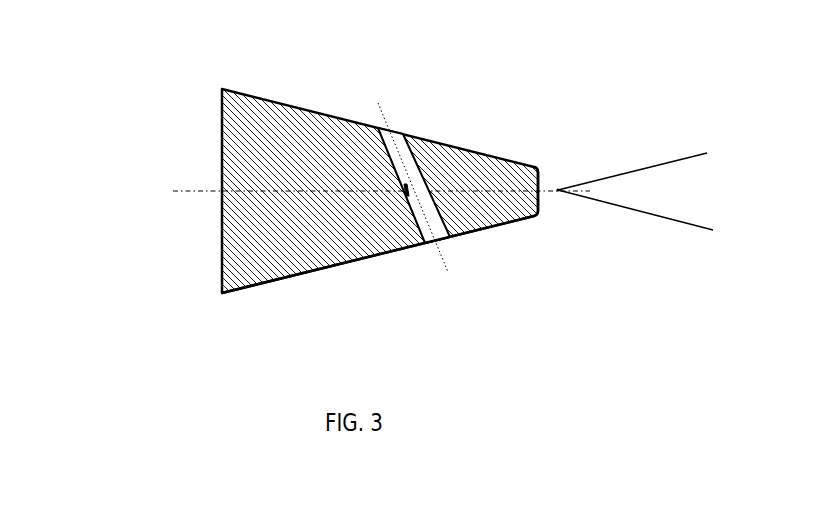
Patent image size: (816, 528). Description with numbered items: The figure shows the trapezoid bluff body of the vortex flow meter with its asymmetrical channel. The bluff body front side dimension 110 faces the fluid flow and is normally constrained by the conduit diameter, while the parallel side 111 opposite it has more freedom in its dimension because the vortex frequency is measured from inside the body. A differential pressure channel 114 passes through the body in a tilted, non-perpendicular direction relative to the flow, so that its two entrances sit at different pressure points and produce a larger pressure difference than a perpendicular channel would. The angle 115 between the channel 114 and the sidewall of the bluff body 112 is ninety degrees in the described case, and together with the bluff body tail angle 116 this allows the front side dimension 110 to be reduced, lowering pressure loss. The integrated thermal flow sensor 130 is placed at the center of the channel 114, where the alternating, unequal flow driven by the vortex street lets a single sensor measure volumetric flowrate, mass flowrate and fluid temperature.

The bluff body front side dimension 110 is at (220, 162).
The parallel side 111 is at (543, 182).
The sidewall of the bluff body 112 is at (295, 277).
The differential pressure channel 114 is at (398, 175).
The angle 115 is at (464, 234).
The bluff body tail angle 116 is at (603, 192).
The integrated thermal flow sensor 130 is at (378, 257).